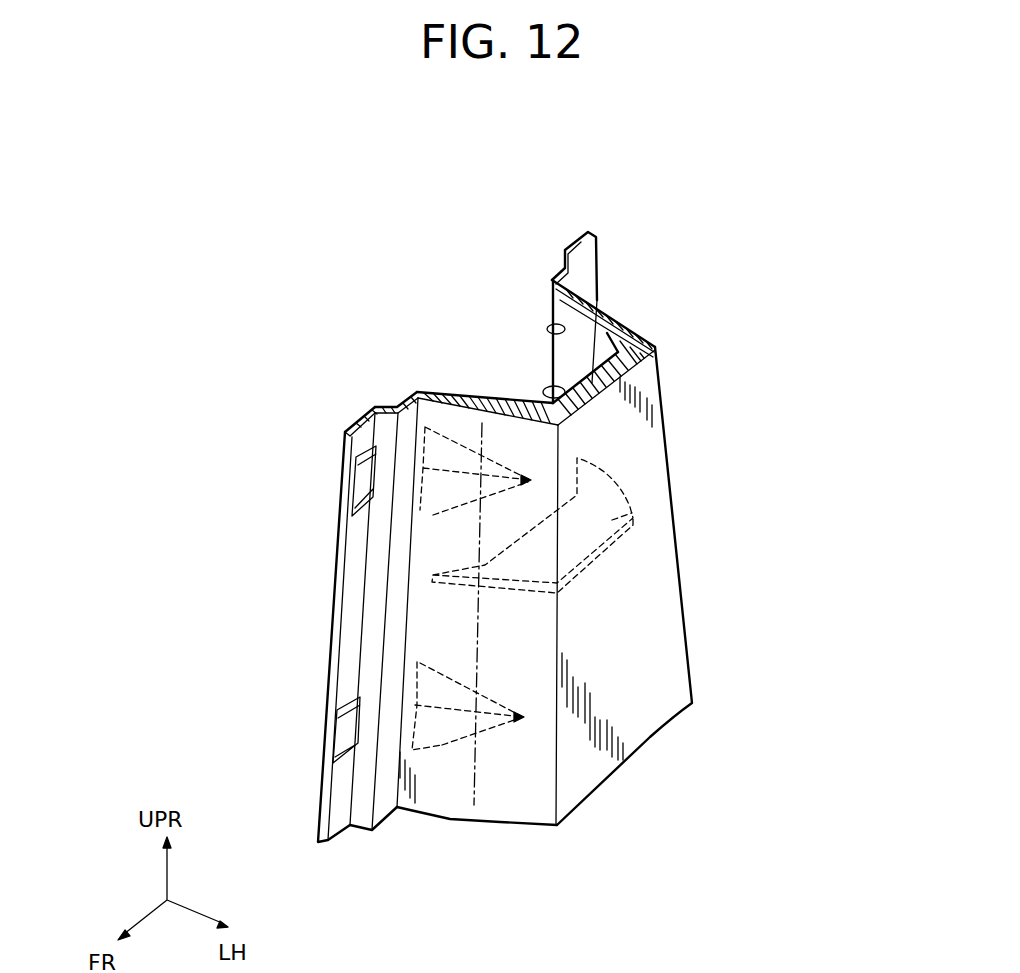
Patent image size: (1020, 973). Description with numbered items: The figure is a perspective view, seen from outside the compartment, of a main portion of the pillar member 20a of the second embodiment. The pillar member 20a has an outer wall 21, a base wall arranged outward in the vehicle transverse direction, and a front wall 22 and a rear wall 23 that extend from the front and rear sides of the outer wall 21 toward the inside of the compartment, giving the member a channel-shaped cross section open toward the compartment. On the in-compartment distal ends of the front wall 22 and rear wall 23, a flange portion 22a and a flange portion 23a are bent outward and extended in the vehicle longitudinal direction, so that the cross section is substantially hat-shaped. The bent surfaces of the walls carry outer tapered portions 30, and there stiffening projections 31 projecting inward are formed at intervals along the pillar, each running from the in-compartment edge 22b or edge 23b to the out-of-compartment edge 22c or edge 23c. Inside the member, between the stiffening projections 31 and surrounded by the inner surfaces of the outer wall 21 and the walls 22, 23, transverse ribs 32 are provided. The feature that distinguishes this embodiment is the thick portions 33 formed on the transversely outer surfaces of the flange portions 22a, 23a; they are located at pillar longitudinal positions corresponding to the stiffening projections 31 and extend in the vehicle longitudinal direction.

The pillar member 20a is at (753, 348).
The outer wall 21 is at (668, 618).
The front wall 22 is at (507, 808).
The flange portion 22a is at (366, 414).
The edge 22b is at (418, 392).
The edge 22c is at (566, 396).
The rear wall 23 is at (580, 271).
The flange portion 23a is at (580, 240).
The edge 23b is at (553, 282).
The edge 23c is at (612, 346).
The outer tapered portion 30 is at (598, 332).
The stiffening projection 31 is at (429, 514).
The transverse rib 32 is at (632, 507).
The thick portion 33 is at (363, 486).